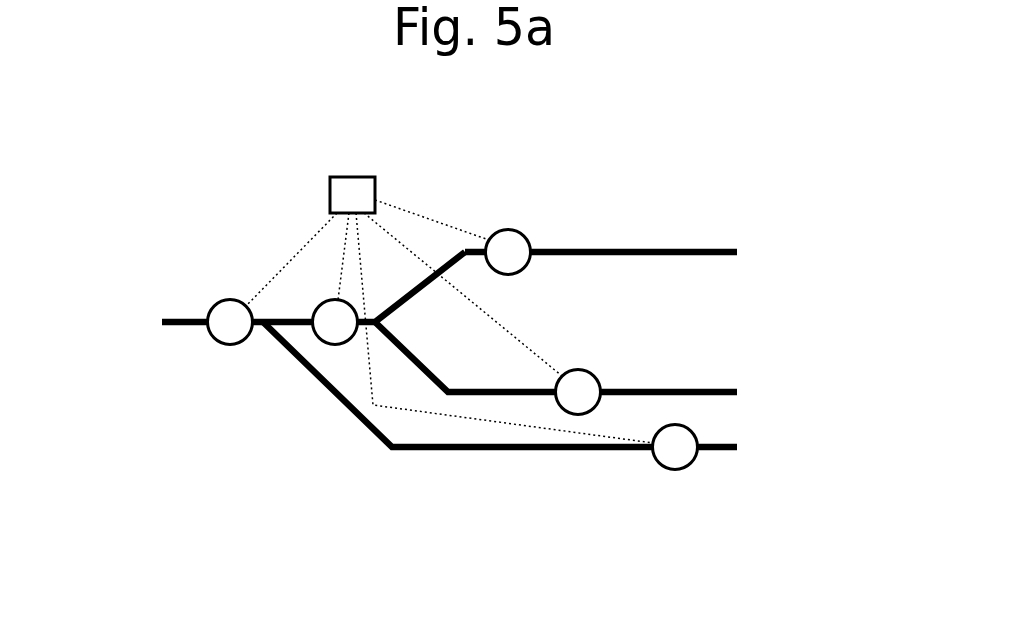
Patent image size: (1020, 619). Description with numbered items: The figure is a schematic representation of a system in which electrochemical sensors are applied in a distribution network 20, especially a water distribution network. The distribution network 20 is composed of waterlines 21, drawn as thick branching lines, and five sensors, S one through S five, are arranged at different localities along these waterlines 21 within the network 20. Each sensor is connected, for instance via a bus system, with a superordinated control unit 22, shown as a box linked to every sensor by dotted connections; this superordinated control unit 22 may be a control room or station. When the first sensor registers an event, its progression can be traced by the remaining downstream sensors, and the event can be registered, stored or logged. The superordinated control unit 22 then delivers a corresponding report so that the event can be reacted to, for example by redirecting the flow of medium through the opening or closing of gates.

The distribution network 20 is at (398, 315).
The waterline 21 is at (666, 250).
The superordinated control unit 22 is at (449, 310).